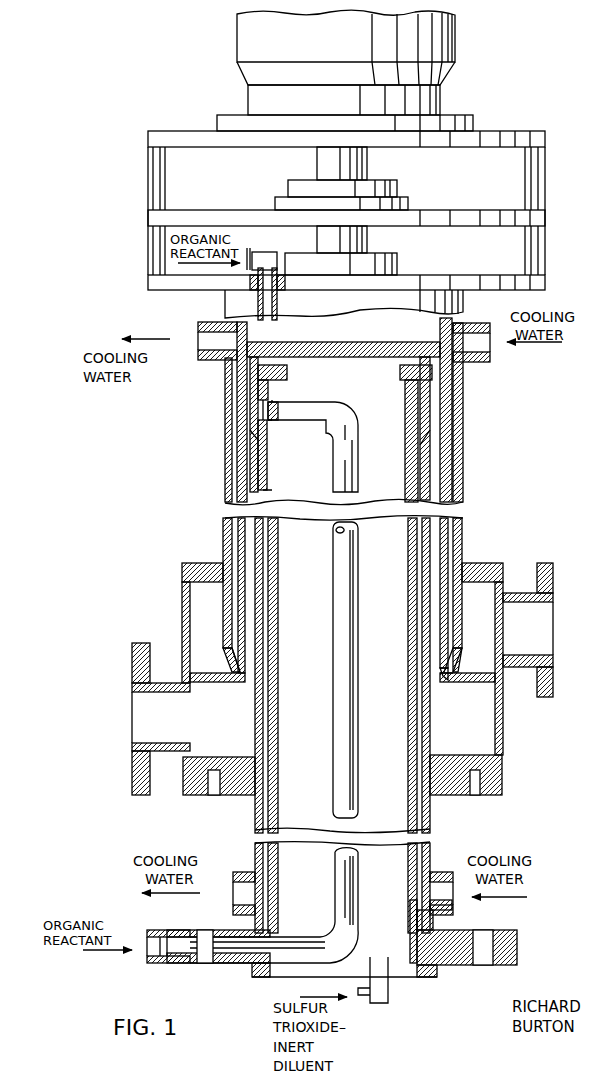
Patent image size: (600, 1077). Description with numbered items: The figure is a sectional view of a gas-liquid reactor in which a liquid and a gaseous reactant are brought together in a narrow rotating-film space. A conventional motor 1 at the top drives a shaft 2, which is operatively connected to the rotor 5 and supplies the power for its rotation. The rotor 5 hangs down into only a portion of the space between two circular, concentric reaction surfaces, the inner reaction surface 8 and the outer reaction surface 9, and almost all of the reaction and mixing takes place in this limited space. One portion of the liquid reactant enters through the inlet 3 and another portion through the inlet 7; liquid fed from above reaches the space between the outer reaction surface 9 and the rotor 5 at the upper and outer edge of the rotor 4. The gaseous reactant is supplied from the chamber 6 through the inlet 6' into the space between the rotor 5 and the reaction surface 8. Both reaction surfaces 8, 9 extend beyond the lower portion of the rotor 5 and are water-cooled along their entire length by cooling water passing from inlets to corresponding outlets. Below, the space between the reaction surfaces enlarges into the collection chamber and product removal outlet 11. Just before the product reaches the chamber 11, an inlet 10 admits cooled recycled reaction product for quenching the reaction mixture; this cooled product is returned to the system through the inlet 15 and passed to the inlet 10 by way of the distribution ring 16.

The motor 1 is at (456, 54).
The shaft 2 is at (363, 240).
The inlet 3 is at (257, 310).
The upper and outer edge of the rotor 4 is at (237, 347).
The rotor 5 is at (299, 346).
The inlet 6' is at (225, 424).
The chamber 6 is at (357, 594).
The inlet 7 is at (292, 403).
The inner reaction surface 8 is at (258, 548).
The outer reaction surface 9 is at (245, 575).
The inlet 10 is at (228, 673).
The collection chamber and product removal outlet 11 is at (140, 725).
The inlet 15 is at (552, 633).
The distribution ring 16 is at (200, 598).